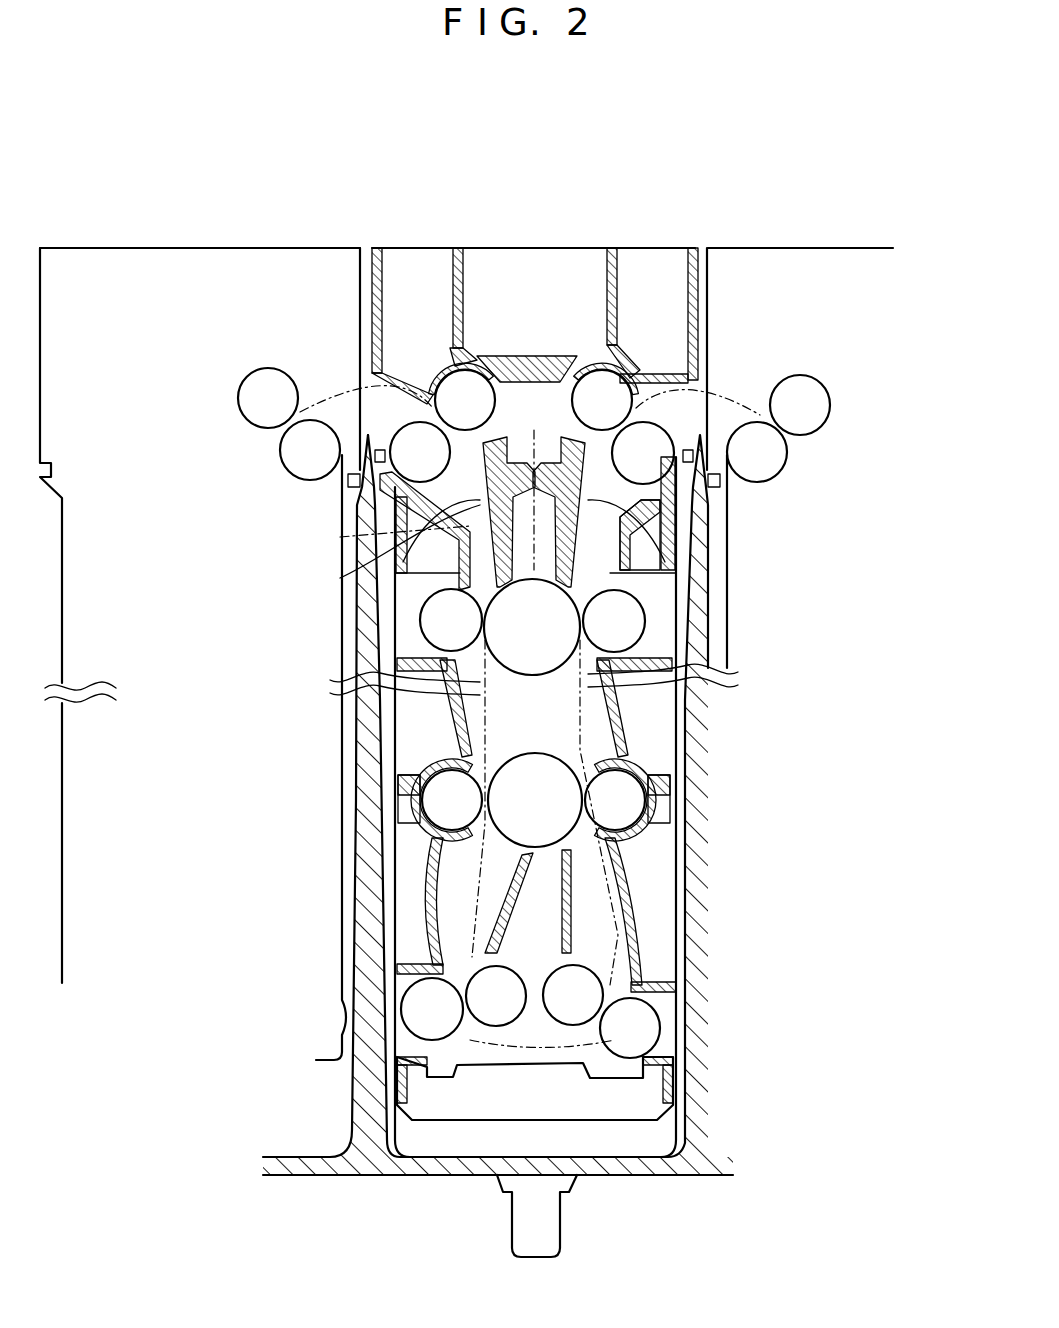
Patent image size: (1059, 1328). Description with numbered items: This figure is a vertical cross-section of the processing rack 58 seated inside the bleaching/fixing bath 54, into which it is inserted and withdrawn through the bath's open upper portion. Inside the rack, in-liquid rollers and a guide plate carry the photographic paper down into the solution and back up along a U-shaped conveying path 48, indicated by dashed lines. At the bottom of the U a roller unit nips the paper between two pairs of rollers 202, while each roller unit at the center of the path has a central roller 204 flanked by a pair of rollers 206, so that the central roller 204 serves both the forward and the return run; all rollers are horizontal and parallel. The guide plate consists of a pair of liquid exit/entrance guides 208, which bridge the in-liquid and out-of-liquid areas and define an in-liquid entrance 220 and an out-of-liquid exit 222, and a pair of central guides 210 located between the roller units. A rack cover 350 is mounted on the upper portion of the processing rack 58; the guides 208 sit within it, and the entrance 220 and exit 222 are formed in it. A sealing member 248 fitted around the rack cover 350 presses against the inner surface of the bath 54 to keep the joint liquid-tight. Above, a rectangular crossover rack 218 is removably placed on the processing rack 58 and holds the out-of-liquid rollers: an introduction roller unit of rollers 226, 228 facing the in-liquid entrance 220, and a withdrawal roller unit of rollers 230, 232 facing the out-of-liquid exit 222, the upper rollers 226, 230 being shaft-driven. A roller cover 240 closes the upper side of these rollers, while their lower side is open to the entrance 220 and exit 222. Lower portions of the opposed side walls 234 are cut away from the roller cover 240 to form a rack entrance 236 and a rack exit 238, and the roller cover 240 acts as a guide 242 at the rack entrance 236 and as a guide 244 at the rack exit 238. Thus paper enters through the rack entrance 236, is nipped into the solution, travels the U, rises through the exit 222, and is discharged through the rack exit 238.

The conveying path 48 is at (393, 535).
The bleaching/fixing bath 54 is at (688, 748).
The processing rack 58 is at (690, 898).
The rollers 202 is at (440, 1027).
The central roller 204 is at (527, 676).
The rollers 206 is at (440, 613).
The liquid exit/entrance guides 208 is at (553, 547).
The central guides 210 is at (445, 703).
The crossover rack 218 is at (575, 246).
The in-liquid entrance 220 is at (398, 575).
The out-of-liquid exit 222 is at (612, 549).
The roller 226 is at (438, 382).
The roller 228 is at (385, 428).
The roller 230 is at (612, 386).
The roller 232 is at (585, 527).
The opposed side walls 234 is at (368, 316).
The rack entrance 236 is at (385, 420).
The rack exit 238 is at (700, 430).
The roller cover 240 is at (530, 355).
The guide 242 is at (372, 382).
The guide 244 is at (688, 427).
The sealing member 248 is at (718, 492).
The rack cover 350 is at (357, 497).